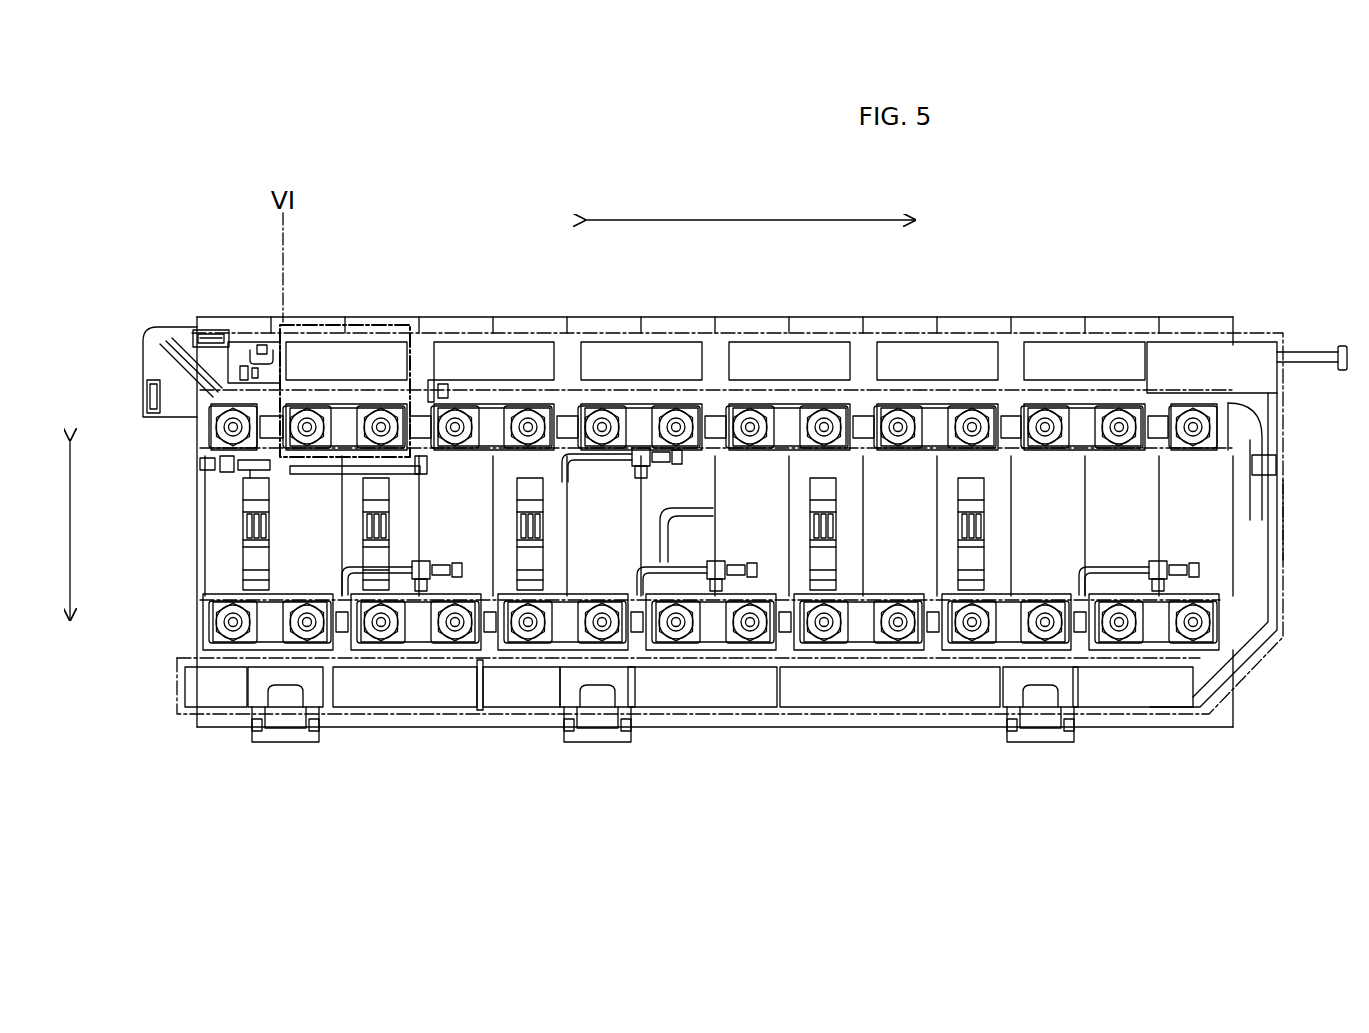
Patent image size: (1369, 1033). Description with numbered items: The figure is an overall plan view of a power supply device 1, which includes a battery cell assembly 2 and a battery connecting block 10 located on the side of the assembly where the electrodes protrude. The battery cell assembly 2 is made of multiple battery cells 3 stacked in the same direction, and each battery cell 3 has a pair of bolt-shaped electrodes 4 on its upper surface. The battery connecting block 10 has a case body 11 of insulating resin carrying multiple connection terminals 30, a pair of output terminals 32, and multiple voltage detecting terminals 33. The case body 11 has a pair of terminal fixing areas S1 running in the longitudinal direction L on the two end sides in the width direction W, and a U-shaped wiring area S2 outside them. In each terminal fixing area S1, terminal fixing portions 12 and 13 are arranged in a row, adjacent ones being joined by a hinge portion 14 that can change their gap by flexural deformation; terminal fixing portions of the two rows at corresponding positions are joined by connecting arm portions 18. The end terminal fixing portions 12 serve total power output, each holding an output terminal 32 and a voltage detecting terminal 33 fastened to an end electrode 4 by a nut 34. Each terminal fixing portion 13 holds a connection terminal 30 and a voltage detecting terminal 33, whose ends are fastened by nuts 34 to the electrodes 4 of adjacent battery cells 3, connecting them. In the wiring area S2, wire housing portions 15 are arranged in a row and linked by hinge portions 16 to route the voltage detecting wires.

The power supply device 1 is at (133, 285).
The battery cell assembly 2 is at (197, 733).
The battery cell 3 is at (228, 720).
The electrode 4 is at (383, 425).
The battery connecting block 10 is at (122, 322).
The case body 11 is at (142, 352).
The terminal fixing portion 12 is at (252, 377).
The terminal fixing portion 13 is at (365, 403).
The hinge portion 14 is at (261, 345).
The wire housing portion 15 is at (403, 350).
The hinge portion 16 is at (455, 383).
The connecting arm portion 18 is at (255, 520).
The connection terminal 30 is at (347, 423).
The output terminal 32 is at (207, 335).
The voltage detecting terminal 33 is at (213, 408).
The nut 34 is at (330, 403).
The terminal fixing area S1 is at (1220, 420).
The wiring area S2 is at (1283, 515).
The length direction L is at (758, 222).
The width direction W is at (76, 576).